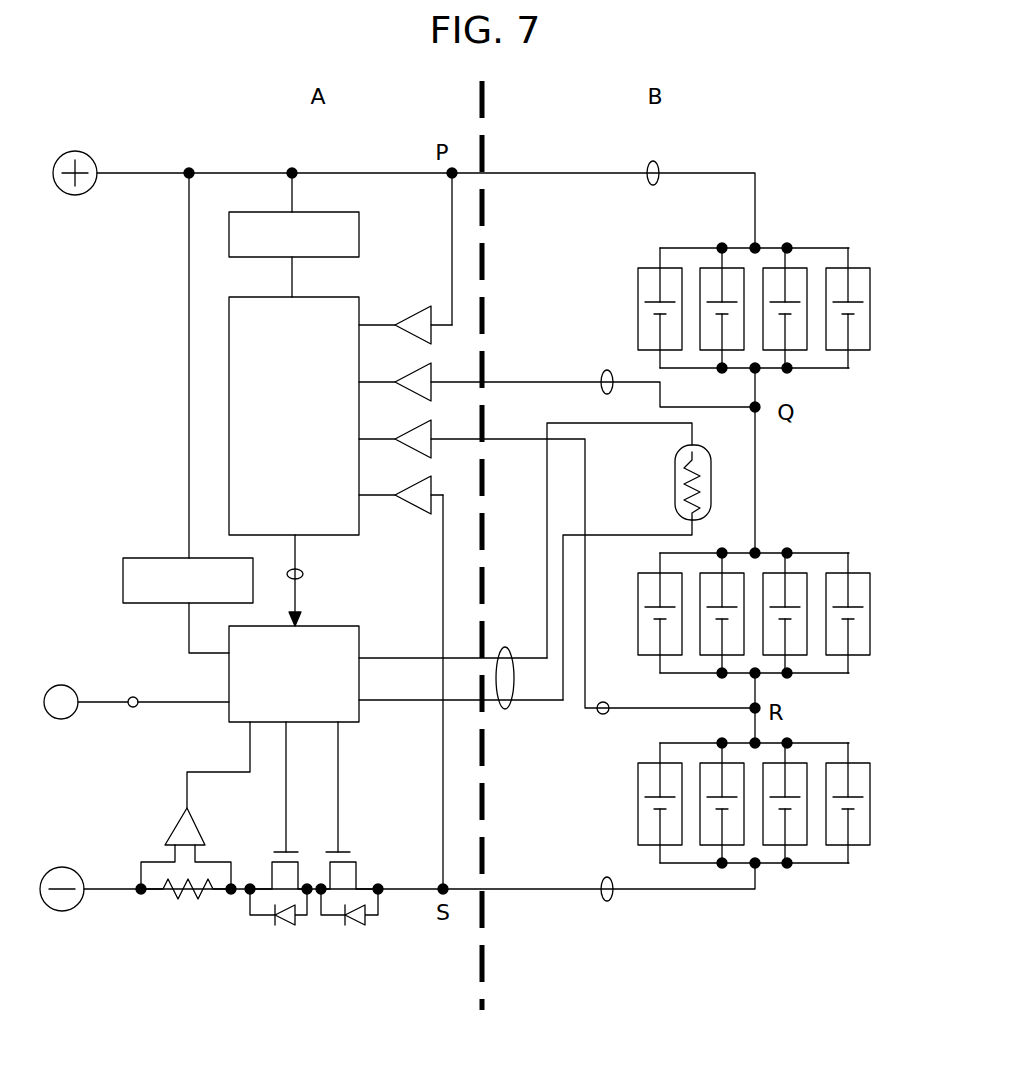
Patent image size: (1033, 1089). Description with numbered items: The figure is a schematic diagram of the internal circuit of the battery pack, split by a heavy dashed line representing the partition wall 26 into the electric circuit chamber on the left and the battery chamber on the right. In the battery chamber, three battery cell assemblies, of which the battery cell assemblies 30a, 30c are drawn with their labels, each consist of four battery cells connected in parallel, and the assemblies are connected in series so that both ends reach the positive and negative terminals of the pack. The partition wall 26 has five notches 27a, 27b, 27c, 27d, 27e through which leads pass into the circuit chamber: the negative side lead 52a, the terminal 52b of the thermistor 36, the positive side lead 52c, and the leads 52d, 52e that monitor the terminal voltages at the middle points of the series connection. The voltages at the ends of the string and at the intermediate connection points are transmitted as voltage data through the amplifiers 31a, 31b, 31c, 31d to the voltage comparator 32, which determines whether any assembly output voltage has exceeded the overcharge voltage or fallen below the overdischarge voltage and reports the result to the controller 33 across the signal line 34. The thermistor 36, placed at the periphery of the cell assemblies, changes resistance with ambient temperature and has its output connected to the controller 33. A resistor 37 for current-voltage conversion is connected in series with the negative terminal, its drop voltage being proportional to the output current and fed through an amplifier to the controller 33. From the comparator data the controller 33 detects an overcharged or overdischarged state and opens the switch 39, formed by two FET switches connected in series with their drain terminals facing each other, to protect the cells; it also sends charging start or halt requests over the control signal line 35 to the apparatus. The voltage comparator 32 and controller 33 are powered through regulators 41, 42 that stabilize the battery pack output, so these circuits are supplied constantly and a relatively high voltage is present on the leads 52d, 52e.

The partition wall 26 is at (508, 938).
The notch 27a is at (599, 867).
The notch 27b is at (461, 658).
The notch 27c is at (603, 194).
The notch 27d is at (593, 559).
The notch 27e is at (593, 378).
The battery cell assembly 30a is at (834, 236).
The battery cell assembly 30c is at (834, 541).
The amplifier 31a is at (414, 320).
The amplifier 31b is at (416, 383).
The amplifier 31c is at (428, 446).
The amplifier 31d is at (418, 507).
The voltage comparator 32 is at (243, 297).
The controller 33 is at (360, 640).
The signal line 34 is at (303, 577).
The control signal line 35 is at (135, 696).
The thermistor 36 is at (675, 471).
The resistor 37 is at (170, 905).
The switch 39 is at (283, 941).
The regulator 41 is at (359, 234).
The regulator 42 is at (139, 559).
The negative side lead 52a is at (612, 898).
The terminal of thermistor 52b is at (505, 710).
The positive side lead 52c is at (658, 165).
The lead 52d is at (602, 715).
The lead 52e is at (604, 373).